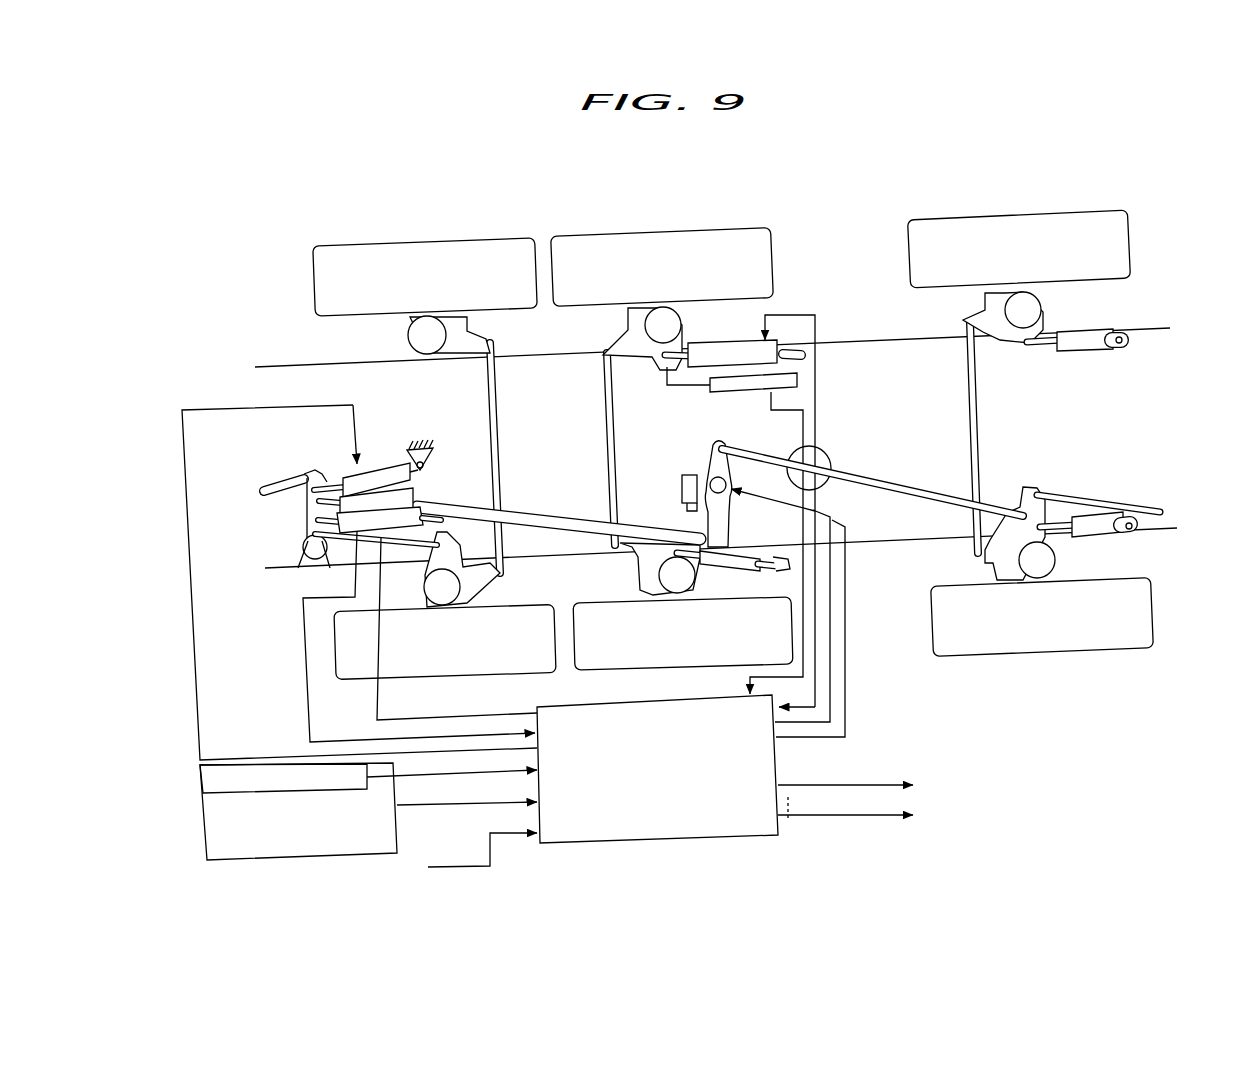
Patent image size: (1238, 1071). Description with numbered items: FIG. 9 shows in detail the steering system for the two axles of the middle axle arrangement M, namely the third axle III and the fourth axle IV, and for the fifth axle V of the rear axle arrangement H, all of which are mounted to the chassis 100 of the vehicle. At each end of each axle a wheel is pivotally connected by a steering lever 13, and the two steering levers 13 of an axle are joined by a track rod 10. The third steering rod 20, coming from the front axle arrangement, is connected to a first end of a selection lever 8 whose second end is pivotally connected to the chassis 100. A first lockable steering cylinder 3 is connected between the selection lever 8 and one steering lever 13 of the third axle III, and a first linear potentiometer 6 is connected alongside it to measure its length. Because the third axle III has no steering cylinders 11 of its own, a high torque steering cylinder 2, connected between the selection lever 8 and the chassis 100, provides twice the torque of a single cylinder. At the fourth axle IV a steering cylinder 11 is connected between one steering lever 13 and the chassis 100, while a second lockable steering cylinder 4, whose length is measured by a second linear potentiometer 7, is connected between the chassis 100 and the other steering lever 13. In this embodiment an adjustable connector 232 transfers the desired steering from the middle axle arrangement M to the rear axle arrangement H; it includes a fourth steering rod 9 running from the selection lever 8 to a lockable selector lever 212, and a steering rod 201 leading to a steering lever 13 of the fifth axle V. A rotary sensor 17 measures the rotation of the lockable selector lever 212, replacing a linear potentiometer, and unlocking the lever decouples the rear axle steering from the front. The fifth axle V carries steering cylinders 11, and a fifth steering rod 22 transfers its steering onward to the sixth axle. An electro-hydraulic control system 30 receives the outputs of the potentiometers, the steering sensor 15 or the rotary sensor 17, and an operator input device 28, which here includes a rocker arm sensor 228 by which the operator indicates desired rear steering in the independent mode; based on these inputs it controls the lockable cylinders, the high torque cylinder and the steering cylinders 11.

The high torque steering cylinder 2 is at (380, 477).
The first lockable steering cylinder 3 is at (403, 533).
The second lockable steering cylinder 4 is at (730, 353).
The first linear potentiometer 6 is at (303, 550).
The second linear potentiometer 7 is at (740, 387).
The selection lever 8 is at (307, 508).
The fourth steering rod 9 is at (540, 523).
The track rod 10 is at (497, 387).
The steering cylinder 11 is at (1093, 340).
The steering lever 13 is at (477, 333).
The steering sensor 15 is at (389, 860).
The rotary sensor 17 is at (682, 489).
The third steering rod 20 is at (277, 480).
The fifth steering rod 22 is at (1108, 505).
The operator input device 28 is at (368, 811).
The electro-hydraulic control system 30 is at (658, 817).
The chassis 100 is at (278, 372).
The steering rod 201 is at (902, 495).
The lockable selector lever 212 is at (710, 460).
The rocker arm sensor 228 is at (368, 778).
The adjustable connector 232 is at (684, 460).
The middle axle arrangement M is at (535, 186).
The third axle III is at (423, 236).
The fourth axle IV is at (677, 218).
The fifth axle V is at (1010, 208).
The rear axle arrangement H is at (1070, 662).